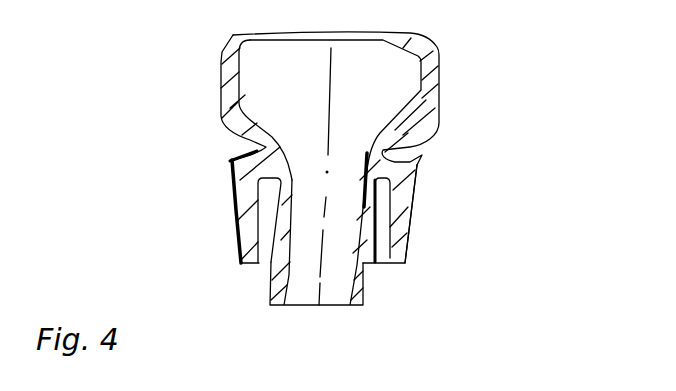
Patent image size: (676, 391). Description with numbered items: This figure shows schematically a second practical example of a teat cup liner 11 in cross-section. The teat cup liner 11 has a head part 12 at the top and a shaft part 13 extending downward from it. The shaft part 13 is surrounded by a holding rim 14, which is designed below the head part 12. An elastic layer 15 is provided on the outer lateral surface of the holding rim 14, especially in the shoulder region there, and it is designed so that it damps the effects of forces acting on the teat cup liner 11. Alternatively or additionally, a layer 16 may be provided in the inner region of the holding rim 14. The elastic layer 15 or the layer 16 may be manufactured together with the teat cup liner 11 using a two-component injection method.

The teat cup liner 11 is at (511, 212).
The head part 12 is at (433, 50).
The shaft part 13 is at (367, 298).
The holding rim 14 is at (405, 243).
The elastic layer 15 is at (228, 160).
The layer 16 is at (415, 201).